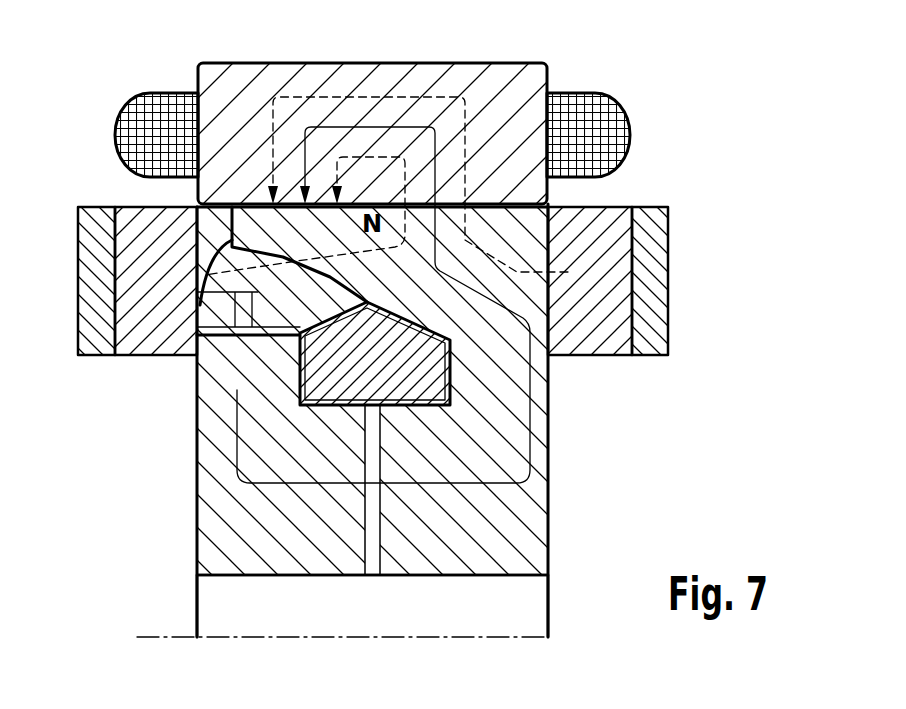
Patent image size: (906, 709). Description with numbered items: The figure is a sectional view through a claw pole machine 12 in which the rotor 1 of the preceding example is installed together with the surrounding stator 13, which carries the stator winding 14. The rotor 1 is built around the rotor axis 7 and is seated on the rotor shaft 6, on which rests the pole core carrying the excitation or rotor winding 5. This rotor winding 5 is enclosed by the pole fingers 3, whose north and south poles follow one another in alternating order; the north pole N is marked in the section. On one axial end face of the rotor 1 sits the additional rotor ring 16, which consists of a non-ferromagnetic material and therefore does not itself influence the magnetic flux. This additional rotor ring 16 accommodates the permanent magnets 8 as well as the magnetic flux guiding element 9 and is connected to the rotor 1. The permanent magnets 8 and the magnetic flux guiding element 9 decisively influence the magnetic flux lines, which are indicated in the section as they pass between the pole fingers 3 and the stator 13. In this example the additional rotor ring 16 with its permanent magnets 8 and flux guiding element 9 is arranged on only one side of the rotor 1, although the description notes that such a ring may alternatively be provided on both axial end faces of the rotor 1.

The rotor 1 is at (598, 468).
The pole fingers 3 is at (270, 275).
The rotor winding 5 is at (437, 370).
The rotor shaft 6 is at (540, 600).
The rotor axis 7 is at (148, 636).
The permanent magnets 8 is at (620, 257).
The magnetic flux guiding element 9 is at (130, 302).
The claw pole machine 12 is at (726, 87).
The stator 13 is at (533, 78).
The stator winding 14 is at (618, 135).
The additional rotor ring 16 is at (88, 266).